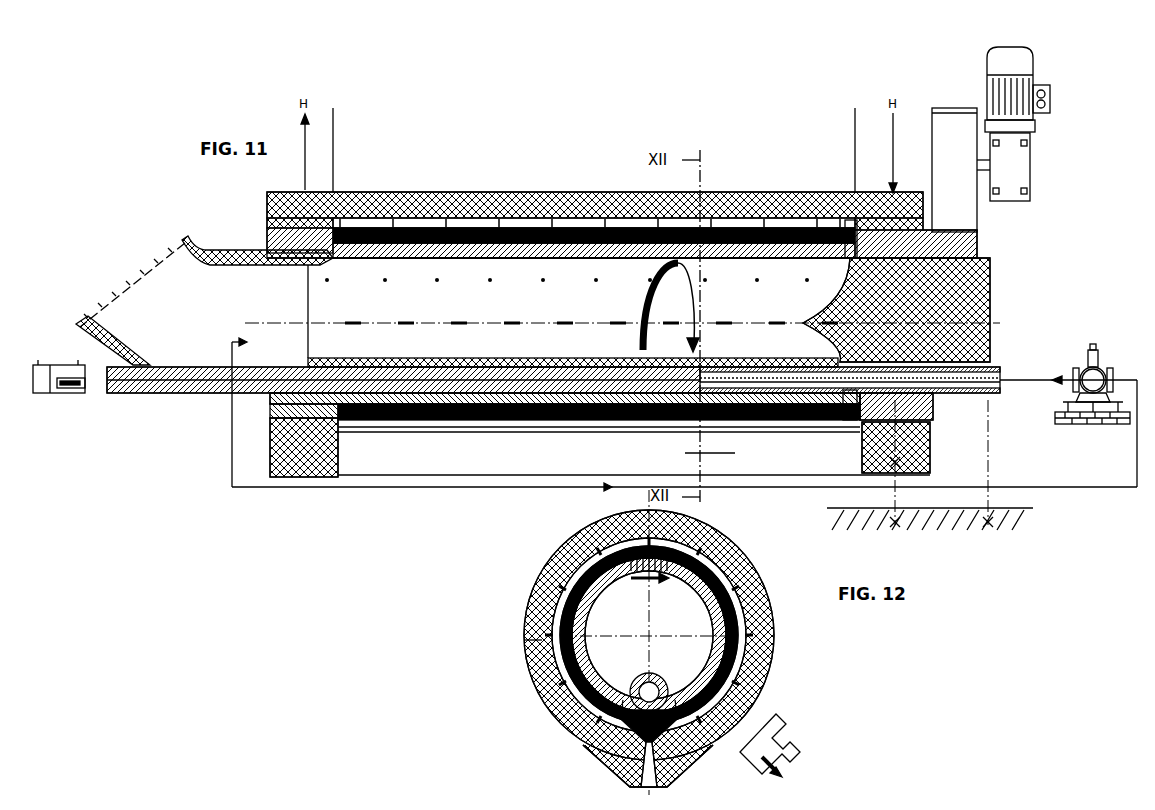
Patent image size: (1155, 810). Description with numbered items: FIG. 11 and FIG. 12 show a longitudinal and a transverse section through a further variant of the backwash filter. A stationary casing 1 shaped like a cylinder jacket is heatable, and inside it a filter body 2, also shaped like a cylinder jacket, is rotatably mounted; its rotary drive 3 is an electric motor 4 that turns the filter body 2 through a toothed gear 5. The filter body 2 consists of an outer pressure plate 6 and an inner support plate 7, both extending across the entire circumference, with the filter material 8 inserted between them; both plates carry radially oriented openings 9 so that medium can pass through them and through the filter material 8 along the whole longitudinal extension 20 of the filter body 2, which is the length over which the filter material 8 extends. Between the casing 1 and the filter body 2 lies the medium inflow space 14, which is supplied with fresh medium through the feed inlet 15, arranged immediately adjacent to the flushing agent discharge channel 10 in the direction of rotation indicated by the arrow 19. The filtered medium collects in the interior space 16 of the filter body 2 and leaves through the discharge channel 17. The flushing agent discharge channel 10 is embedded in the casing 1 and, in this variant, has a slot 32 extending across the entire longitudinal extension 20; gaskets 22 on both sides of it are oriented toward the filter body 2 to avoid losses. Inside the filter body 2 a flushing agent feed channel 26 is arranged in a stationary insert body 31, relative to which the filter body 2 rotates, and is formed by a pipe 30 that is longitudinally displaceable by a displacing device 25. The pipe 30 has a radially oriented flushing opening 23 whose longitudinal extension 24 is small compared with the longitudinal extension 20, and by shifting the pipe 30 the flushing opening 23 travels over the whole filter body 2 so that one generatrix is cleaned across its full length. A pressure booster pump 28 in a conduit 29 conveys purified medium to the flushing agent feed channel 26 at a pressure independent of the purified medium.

In FIG. 11, the casing 1 is at (802, 197).
In FIG. 12, the casing 1 is at (765, 668).
In FIG. 11, the filter body 2 is at (267, 210).
In FIG. 12, the filter body 2 is at (750, 608).
In FIG. 11, the rotary drive 3 is at (1052, 100).
In FIG. 11, the electric motor 4 is at (1010, 58).
In FIG. 11, the toothed gear 5 is at (957, 205).
In FIG. 11, the pressure plate 6 is at (740, 237).
In FIG. 12, the pressure plate 6 is at (745, 635).
In FIG. 11, the support plate 7 is at (660, 237).
In FIG. 12, the support plate 7 is at (723, 690).
In FIG. 11, the filter material 8 is at (646, 243).
In FIG. 12, the filter material 8 is at (535, 672).
In FIG. 11, the openings 9 is at (848, 232).
In FIG. 12, the openings 9 is at (668, 555).
In FIG. 12, the flushing agent discharge channel 10 is at (655, 778).
In FIG. 11, the medium inflow space 14 is at (545, 222).
In FIG. 12, the medium inflow space 14 is at (522, 622).
In FIG. 12, the feed inlet 15 is at (745, 737).
In FIG. 11, the interior space 16 is at (533, 328).
In FIG. 12, the interior space 16 is at (629, 641).
In FIG. 11, the discharge channel 17 is at (145, 290).
In FIG. 11, the arrow 19 is at (700, 331).
In FIG. 12, the arrow 19 is at (640, 581).
In FIG. 11, the longitudinal extension 20 is at (855, 112).
In FIG. 12, the gaskets 22 is at (618, 762).
In FIG. 11, the flushing opening 23 is at (727, 365).
In FIG. 12, the flushing opening 23 is at (669, 690).
In FIG. 11, the longitudinal extension 24 is at (710, 444).
In FIG. 11, the displacing device 25 is at (66, 397).
In FIG. 11, the flushing agent feed channel 26 is at (760, 366).
In FIG. 12, the flushing agent feed channel 26 is at (637, 679).
In FIG. 11, the pressure booster pump 28 is at (1102, 368).
In FIG. 11, the conduit 29 is at (1118, 490).
In FIG. 11, the pipe 30 is at (628, 360).
In FIG. 12, the pipe 30 is at (669, 678).
In FIG. 11, the insert body 31 is at (990, 289).
In FIG. 12, the insert body 31 is at (651, 673).
In FIG. 12, the slot 32 is at (673, 777).